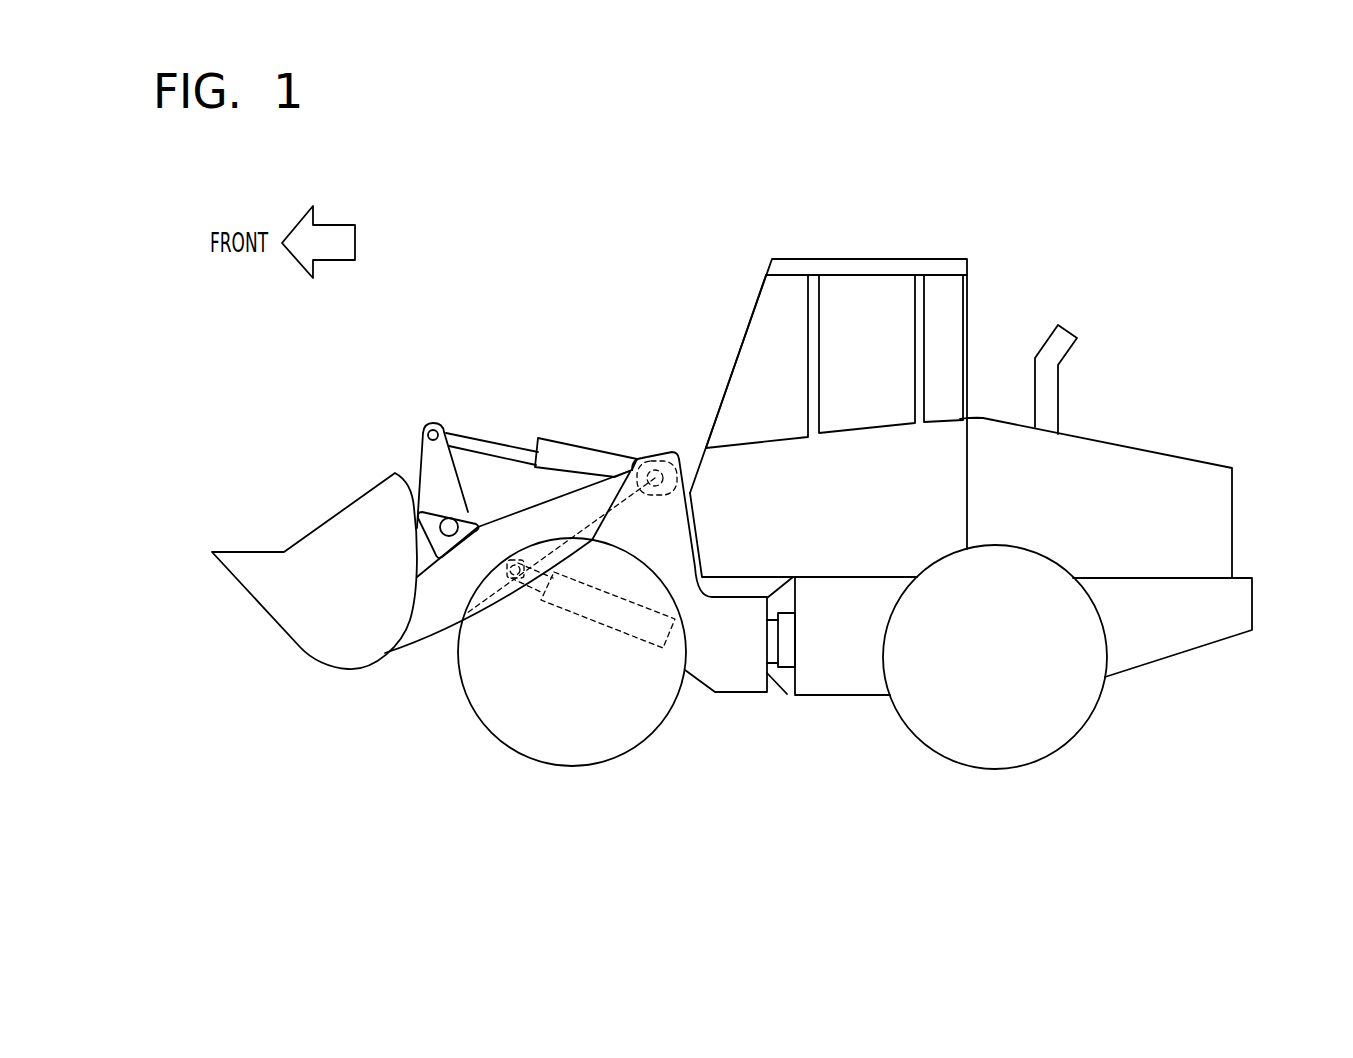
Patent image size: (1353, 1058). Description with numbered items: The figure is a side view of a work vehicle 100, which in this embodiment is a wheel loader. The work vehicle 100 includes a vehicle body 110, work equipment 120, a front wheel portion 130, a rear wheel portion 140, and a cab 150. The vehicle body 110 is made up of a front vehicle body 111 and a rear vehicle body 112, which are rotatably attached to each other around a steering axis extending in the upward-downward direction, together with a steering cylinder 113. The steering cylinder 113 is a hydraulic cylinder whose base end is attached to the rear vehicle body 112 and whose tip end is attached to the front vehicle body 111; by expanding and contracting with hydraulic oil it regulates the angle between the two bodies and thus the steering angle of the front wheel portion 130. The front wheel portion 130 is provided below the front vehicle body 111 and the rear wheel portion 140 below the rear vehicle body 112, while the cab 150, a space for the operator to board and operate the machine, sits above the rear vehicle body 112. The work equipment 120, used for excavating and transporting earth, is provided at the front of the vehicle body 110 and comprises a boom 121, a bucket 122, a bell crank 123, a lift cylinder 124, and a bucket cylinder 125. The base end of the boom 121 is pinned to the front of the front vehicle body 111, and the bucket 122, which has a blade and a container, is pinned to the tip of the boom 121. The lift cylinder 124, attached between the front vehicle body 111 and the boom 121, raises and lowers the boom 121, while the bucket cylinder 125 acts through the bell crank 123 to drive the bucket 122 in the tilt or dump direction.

The work vehicle 100 is at (1087, 205).
The vehicle body 110 is at (751, 805).
The front vehicle body 111 is at (735, 695).
The rear vehicle body 112 is at (862, 697).
The steering cylinder 113 is at (787, 695).
The work equipment 120 is at (310, 442).
The boom 121 is at (420, 642).
The bucket 122 is at (310, 658).
The bell crank 123 is at (428, 420).
The lift cylinder 124 is at (594, 621).
The bucket cylinder 125 is at (567, 441).
The front wheel portion 130 is at (552, 767).
The rear wheel portion 140 is at (985, 770).
The cab 150 is at (812, 259).